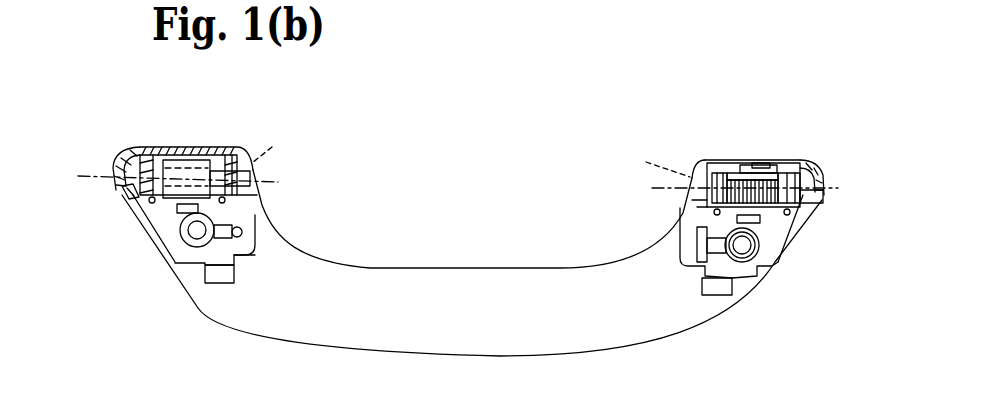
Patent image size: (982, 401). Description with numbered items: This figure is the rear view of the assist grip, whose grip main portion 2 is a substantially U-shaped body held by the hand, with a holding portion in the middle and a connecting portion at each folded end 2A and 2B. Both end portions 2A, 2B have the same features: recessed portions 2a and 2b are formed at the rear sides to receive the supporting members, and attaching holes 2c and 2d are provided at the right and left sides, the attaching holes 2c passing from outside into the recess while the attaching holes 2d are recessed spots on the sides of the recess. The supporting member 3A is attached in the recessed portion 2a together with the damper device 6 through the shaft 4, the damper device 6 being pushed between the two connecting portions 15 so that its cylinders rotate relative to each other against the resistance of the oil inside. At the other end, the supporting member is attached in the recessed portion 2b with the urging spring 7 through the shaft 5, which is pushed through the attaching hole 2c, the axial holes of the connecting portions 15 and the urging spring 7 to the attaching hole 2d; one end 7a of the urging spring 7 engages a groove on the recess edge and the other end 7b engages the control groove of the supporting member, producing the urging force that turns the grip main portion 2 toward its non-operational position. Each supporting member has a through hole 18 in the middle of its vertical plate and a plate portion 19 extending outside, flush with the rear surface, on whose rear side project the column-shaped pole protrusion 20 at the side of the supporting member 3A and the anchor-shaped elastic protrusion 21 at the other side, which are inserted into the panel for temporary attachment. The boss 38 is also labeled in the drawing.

The grip main portion 2 is at (458, 264).
The end portion 2A is at (158, 247).
The end portion 2B is at (797, 238).
The recessed portion 2a is at (163, 163).
The recessed portion 2b is at (712, 162).
The attaching hole 2c is at (113, 177).
The attaching hole 2d is at (471, 156).
The supporting member 3A is at (166, 220).
The shaft 4 is at (124, 188).
The shaft 5 is at (818, 197).
The damper device 6 is at (190, 172).
The urging spring 7 is at (735, 180).
The one end of urging spring 7a is at (763, 167).
The other end of urging spring 7b is at (690, 211).
The connecting portion 15 is at (719, 172).
The through hole 18 is at (210, 230).
The plate portion 19 is at (257, 241).
The pole protrusion 20 is at (243, 232).
The elastic protrusion 21 is at (686, 233).
The boss 38 is at (758, 255).